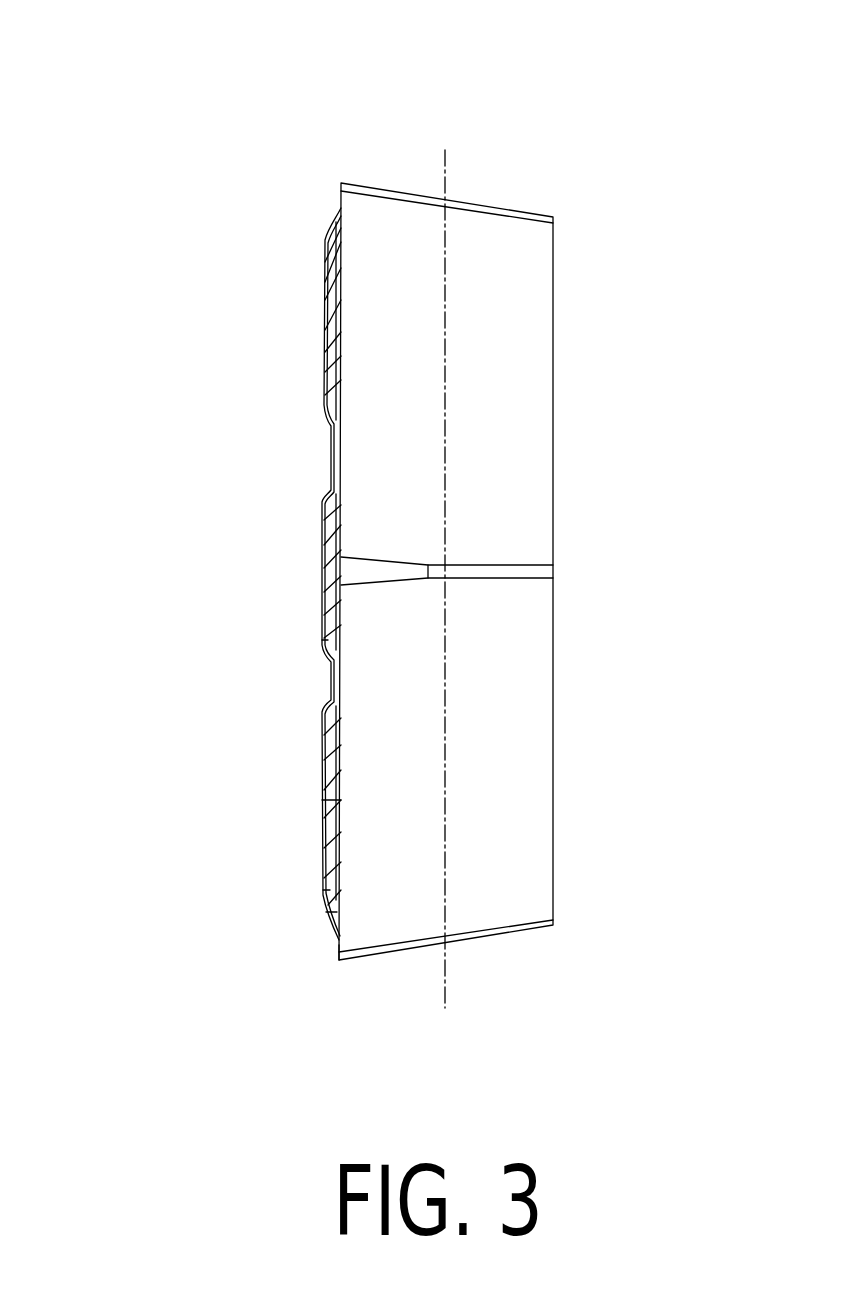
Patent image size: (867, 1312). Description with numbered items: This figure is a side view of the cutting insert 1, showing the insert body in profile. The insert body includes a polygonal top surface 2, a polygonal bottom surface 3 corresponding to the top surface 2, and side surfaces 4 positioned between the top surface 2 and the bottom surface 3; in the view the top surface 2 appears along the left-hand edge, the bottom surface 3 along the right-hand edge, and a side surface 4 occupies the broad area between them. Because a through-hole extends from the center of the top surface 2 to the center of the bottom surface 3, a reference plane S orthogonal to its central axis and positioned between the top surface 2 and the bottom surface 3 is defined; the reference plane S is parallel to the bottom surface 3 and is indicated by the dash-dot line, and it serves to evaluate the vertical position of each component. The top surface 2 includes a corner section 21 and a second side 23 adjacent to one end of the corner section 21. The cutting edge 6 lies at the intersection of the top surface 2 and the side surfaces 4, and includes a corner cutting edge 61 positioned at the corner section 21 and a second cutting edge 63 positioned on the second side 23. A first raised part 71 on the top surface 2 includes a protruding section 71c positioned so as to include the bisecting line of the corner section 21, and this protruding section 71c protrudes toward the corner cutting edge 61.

The cutting insert 1 is at (378, 135).
The top surface 2 is at (330, 677).
The bottom surface 3 is at (553, 667).
The side surfaces 4 is at (513, 438).
The cutting edge 6 is at (210, 832).
The second cutting edge 63 is at (330, 750).
The corner cutting edge 61 is at (340, 957).
The second side 23 is at (340, 817).
The first raised part 71 is at (207, 944).
The protruding section 71c is at (337, 915).
The corner section 21 is at (338, 960).
The reference plane S is at (446, 607).